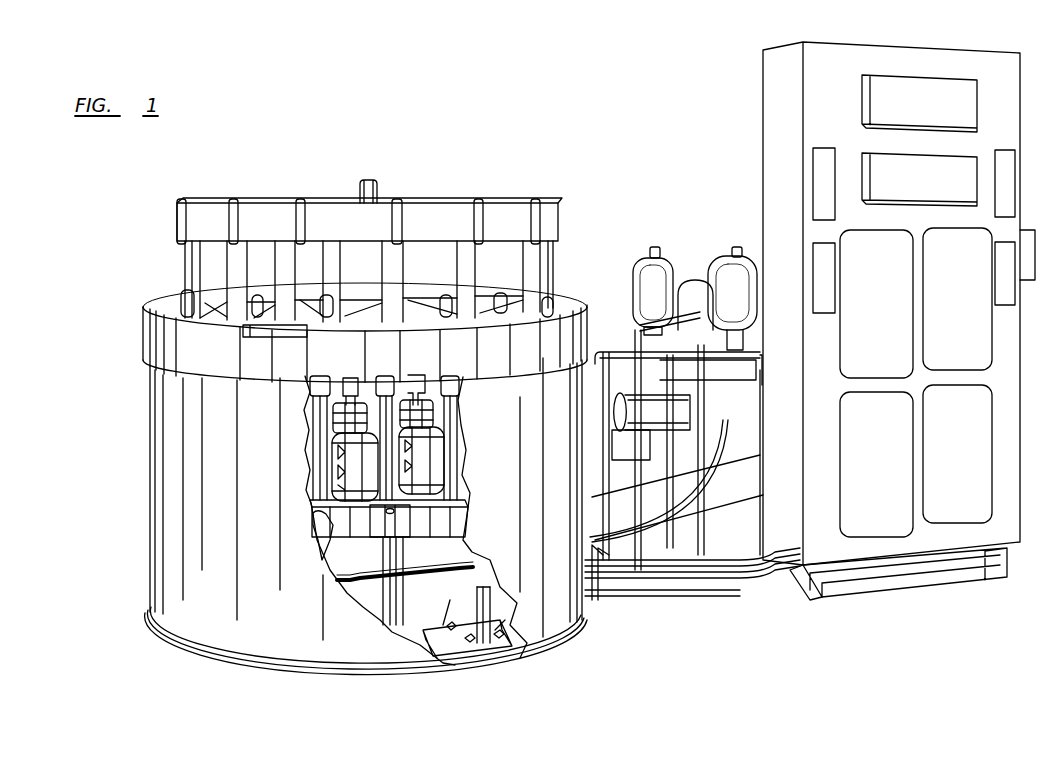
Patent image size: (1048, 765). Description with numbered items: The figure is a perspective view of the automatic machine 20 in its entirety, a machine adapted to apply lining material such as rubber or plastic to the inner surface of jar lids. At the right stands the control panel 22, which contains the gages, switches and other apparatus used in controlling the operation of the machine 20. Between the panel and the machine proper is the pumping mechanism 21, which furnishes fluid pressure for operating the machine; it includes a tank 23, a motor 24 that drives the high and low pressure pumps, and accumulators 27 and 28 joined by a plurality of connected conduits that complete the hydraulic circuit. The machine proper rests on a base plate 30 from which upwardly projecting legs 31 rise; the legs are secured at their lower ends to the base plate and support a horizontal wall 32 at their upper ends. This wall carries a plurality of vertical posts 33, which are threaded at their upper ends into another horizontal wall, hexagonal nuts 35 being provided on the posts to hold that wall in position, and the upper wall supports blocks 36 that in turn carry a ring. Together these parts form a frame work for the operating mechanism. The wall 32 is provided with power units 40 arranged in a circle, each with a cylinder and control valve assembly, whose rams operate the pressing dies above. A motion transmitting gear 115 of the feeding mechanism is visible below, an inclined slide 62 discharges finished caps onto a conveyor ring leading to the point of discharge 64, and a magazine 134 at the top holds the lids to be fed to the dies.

The automatic machine 20 is at (133, 383).
The pumping mechanism 21 is at (697, 252).
The control panel 22 is at (755, 141).
The tank 23 is at (757, 486).
The motor 24 is at (750, 250).
The accumulator 27 is at (648, 266).
The accumulator 28 is at (745, 294).
The base plate 30 is at (448, 655).
The legs 31 is at (390, 620).
The horizontal wall 32 is at (455, 521).
The vertical posts 33 is at (322, 453).
The hexagonal nuts 35 is at (310, 383).
The blocks 36 is at (261, 250).
The power units 40 is at (463, 455).
The inclined slide 62 is at (355, 298).
The point of discharge 64 is at (270, 337).
The motion transmitting gear 115 is at (453, 580).
The magazine 134 is at (372, 183).